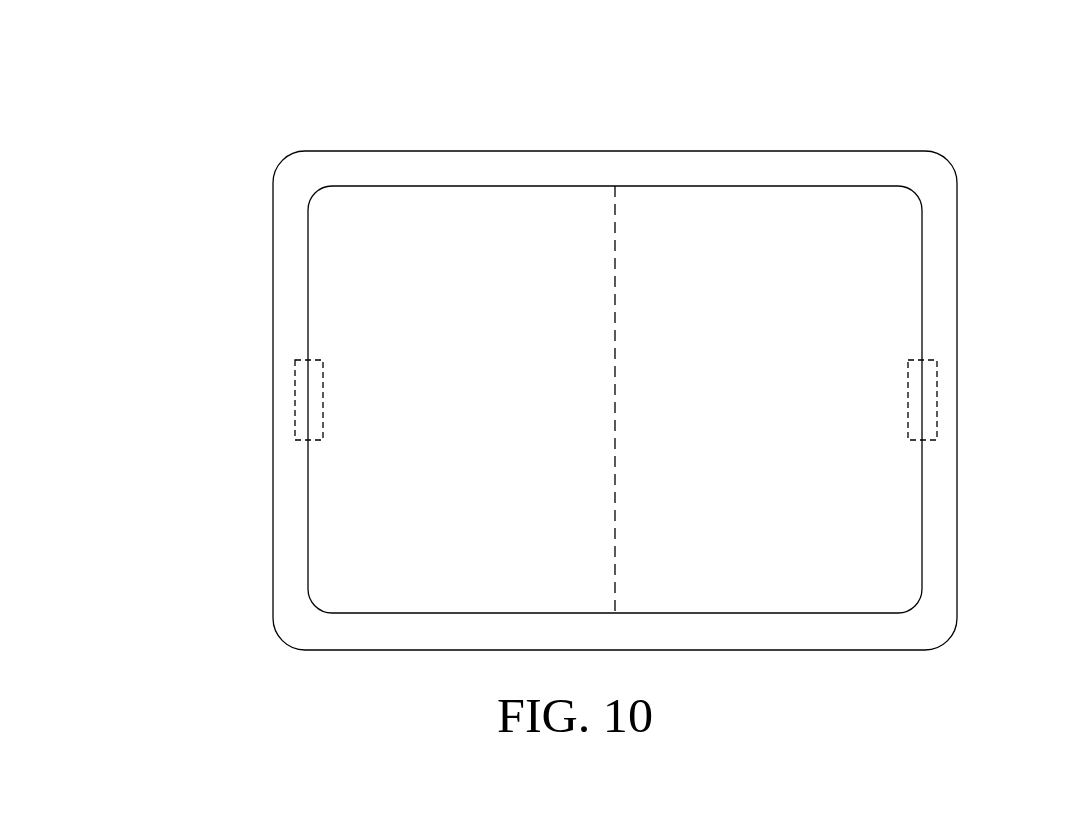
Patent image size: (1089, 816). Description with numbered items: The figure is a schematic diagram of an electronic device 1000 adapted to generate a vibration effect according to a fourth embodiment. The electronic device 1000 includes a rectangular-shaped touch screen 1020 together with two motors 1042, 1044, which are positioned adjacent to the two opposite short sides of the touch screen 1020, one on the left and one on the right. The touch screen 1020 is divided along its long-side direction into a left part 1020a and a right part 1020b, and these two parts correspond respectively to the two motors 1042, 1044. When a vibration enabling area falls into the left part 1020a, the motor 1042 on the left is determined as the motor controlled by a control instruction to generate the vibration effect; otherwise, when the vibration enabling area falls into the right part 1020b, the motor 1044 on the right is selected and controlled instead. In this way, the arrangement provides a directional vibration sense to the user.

The electronic device 1000 is at (220, 124).
The touch screen 1020 is at (860, 179).
The left part 1020a is at (504, 203).
The right part 1020b is at (710, 203).
The motor 1042 is at (295, 400).
The motor 1044 is at (937, 400).